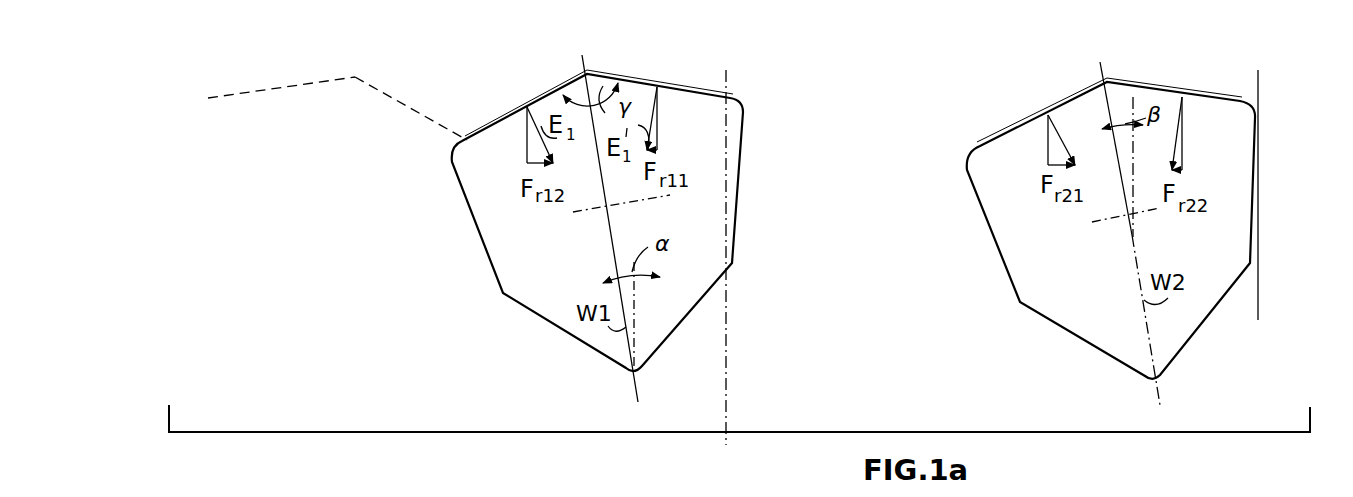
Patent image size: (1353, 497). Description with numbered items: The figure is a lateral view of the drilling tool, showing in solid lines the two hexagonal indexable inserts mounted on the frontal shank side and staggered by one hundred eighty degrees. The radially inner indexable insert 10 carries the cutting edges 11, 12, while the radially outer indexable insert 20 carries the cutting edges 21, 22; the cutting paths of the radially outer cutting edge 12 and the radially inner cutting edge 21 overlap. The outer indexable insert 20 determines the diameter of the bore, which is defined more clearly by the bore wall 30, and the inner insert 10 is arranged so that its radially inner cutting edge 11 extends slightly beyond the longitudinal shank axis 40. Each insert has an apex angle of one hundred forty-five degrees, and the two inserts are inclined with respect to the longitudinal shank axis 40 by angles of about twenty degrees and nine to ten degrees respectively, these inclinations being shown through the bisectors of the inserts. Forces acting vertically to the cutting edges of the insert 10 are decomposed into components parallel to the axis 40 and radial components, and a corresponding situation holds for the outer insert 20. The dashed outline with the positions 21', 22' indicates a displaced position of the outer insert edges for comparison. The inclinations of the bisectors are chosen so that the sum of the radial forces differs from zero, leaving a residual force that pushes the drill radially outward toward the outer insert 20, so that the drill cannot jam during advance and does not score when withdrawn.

The radially inner indexable insert 10 is at (743, 160).
The radially inner cutting edge 11 is at (688, 89).
The radially outer cutting edge of the inner insert 12 is at (527, 107).
The radially outer indexable insert 20 is at (995, 247).
The radially inner cutting edge of the outer insert 21 is at (1042, 108).
The cutting edge of the outer insert 22 is at (1174, 76).
The bore wall 30 is at (1260, 302).
The longitudinal shank axis 40 is at (726, 355).
The prior art cutting edge position 21' is at (401, 121).
The prior art cutting edge position 22' is at (281, 121).